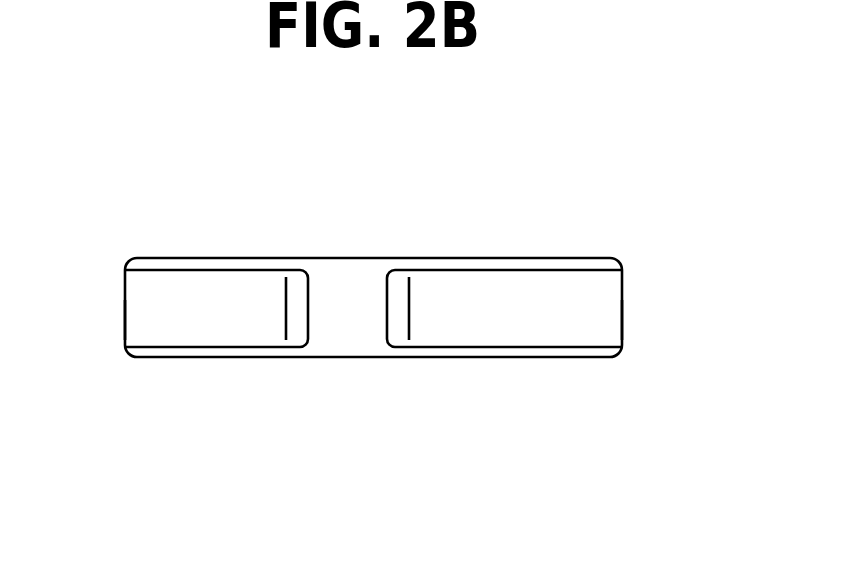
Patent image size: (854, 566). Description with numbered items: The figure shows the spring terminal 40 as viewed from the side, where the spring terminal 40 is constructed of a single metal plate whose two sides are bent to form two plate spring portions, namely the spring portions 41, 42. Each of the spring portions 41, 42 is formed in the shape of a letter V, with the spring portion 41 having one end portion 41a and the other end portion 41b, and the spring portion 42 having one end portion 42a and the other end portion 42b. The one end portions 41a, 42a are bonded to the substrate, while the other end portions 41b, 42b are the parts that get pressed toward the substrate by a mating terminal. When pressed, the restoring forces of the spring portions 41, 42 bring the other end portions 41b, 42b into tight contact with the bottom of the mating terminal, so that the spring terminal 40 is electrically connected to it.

The spring terminal 40 is at (357, 335).
The spring portion 41 is at (517, 290).
The one end portion 41a is at (505, 357).
The other end portion 41b is at (410, 302).
The spring portion 42 is at (180, 292).
The one end portion 42a is at (168, 358).
The other end portion 42b is at (286, 318).